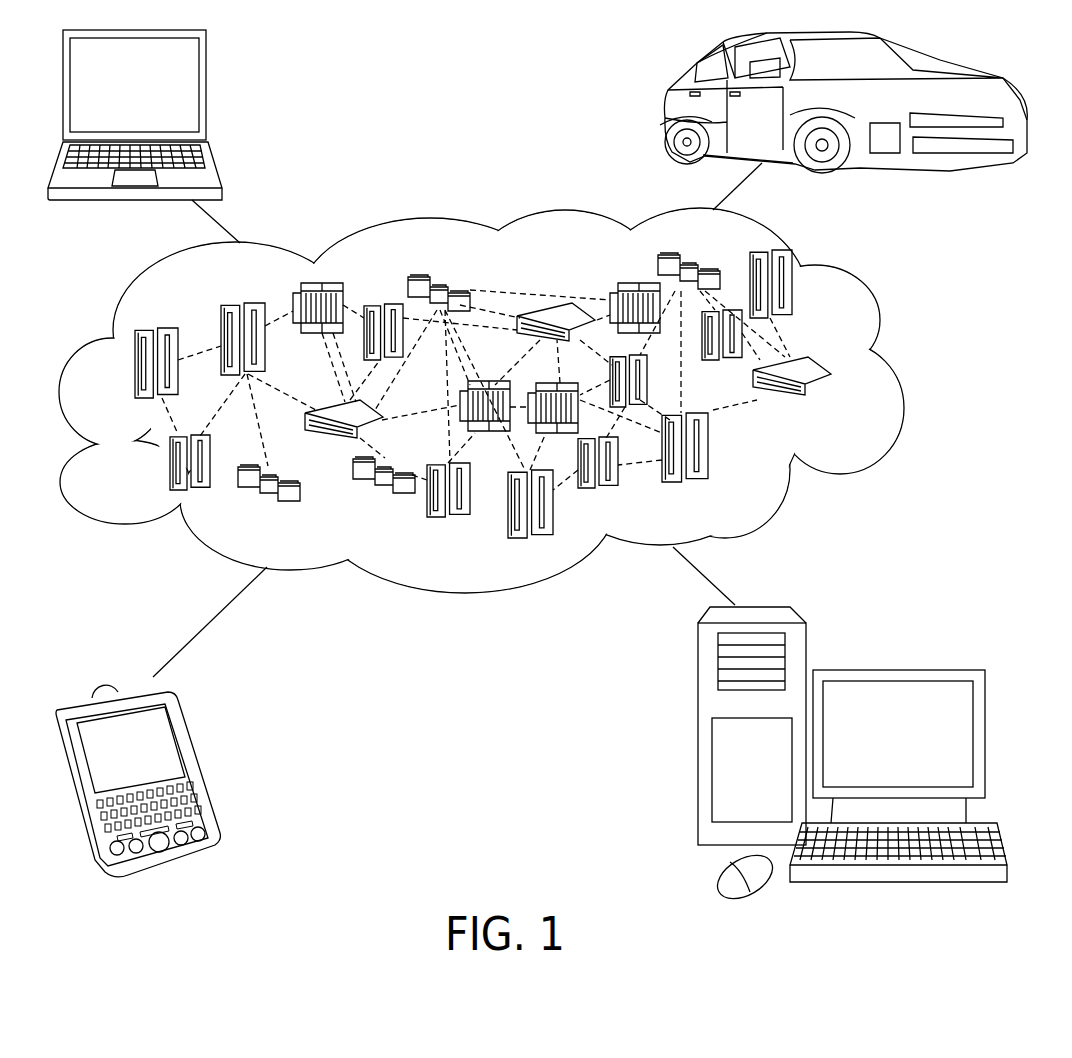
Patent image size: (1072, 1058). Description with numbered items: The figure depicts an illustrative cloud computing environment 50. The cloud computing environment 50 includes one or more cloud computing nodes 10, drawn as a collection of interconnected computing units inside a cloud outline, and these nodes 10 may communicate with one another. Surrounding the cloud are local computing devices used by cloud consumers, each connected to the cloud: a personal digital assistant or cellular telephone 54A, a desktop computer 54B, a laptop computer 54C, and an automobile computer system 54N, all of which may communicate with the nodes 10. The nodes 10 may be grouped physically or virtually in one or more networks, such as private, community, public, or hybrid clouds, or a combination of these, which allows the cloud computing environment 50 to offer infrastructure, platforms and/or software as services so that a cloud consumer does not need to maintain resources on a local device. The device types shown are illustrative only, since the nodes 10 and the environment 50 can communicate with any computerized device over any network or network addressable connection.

The cloud computing nodes 10 is at (838, 403).
The cloud computing environment 50 is at (895, 373).
The personal digital assistant (PDA) or cellular telephone 54A is at (196, 765).
The desktop computer 54B is at (893, 668).
The laptop computer 54C is at (207, 92).
The automobile computer system 54N is at (665, 110).